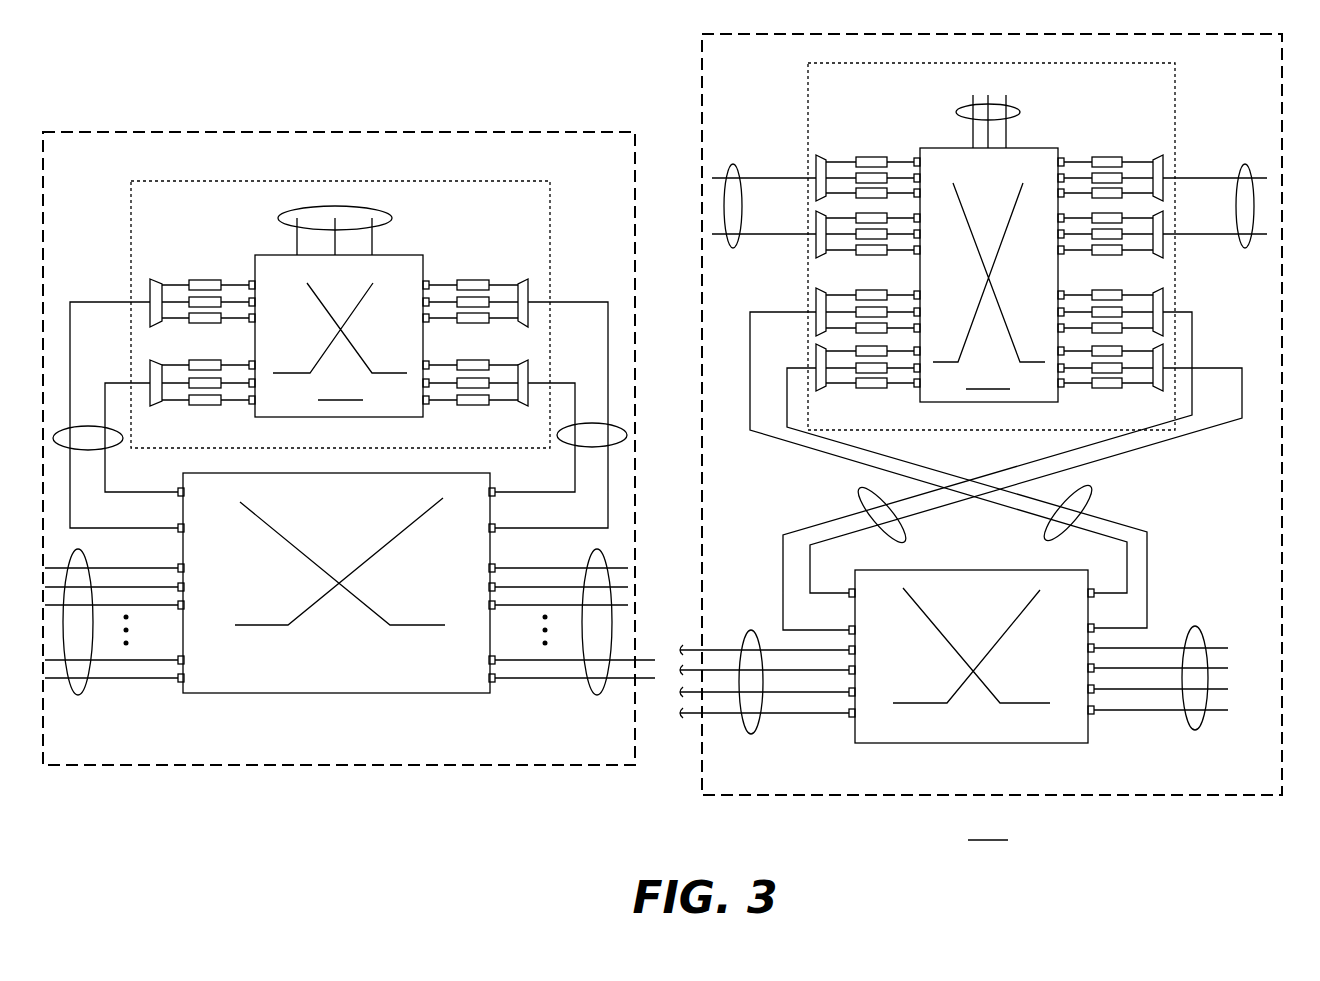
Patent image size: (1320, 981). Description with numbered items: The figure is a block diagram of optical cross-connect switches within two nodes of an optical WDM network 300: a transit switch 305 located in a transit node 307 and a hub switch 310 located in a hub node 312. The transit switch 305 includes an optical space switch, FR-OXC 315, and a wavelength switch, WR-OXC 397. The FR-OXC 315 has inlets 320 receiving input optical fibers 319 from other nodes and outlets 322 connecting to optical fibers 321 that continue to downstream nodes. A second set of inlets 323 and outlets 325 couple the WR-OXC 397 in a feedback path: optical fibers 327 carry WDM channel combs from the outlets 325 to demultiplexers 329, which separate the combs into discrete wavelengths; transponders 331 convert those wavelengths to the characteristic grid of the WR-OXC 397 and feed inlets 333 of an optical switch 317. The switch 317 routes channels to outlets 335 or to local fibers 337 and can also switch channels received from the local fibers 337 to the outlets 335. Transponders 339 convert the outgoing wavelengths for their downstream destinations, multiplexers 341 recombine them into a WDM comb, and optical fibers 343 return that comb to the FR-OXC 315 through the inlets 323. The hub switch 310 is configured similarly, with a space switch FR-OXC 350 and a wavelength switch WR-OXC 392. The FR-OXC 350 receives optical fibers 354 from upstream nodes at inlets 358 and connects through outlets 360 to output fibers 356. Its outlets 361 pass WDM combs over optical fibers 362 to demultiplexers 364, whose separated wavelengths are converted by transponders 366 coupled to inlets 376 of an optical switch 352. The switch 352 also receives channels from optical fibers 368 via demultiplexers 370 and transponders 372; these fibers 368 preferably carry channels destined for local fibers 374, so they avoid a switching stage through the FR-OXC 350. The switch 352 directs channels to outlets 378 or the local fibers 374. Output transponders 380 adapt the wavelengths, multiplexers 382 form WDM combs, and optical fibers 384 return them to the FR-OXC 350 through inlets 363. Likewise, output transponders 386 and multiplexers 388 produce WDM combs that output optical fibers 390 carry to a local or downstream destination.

The optical network 300 is at (981, 442).
The transit switch 305 is at (350, 616).
The transit node 307 is at (570, 768).
The hub switch 310 is at (977, 680).
The hub node 312 is at (1120, 797).
The FR-OXC 315 is at (430, 697).
The optical switch 317 is at (339, 351).
The input optical fibers 319 is at (78, 696).
The inlets 320 is at (183, 692).
The optical fibers 321 is at (597, 696).
The outlets 322 is at (490, 694).
The inlets 323 is at (178, 527).
The outlets 325 is at (495, 525).
The optical fibers 327 is at (588, 447).
The demultiplexers 329 is at (533, 290).
The transponders 331 is at (478, 281).
The inlets 333 is at (431, 282).
The outlets 335 is at (250, 282).
The local fibers 337 is at (330, 204).
The transponders 339 is at (203, 277).
The multiplexers 341 is at (152, 282).
The optical fibers 343 is at (96, 446).
The FR-OXC 350 is at (905, 745).
The optical switch 352 is at (989, 290).
The optical fibers 354 is at (751, 735).
The output fibers 356 is at (1200, 730).
The inlets 358 is at (853, 722).
The outlets 360 is at (1090, 723).
The outlets 361 is at (1094, 628).
The optical fibers 362 is at (1093, 490).
The inlets 363 is at (850, 628).
The demultiplexers 364 is at (814, 342).
The transponders 366 is at (866, 291).
The optical fibers 368 is at (733, 170).
The demultiplexers 370 is at (814, 206).
The transponders 372 is at (876, 154).
The local fibers 374 is at (1022, 112).
The inlets 376 is at (916, 160).
The outlets 378 is at (1112, 155).
The output transponders 380 is at (1104, 295).
The multiplexers 382 is at (1165, 385).
The optical fibers 384 is at (858, 492).
The output transponders 386 is at (1063, 157).
The multiplexers 388 is at (1162, 157).
The output optical fibers 390 is at (1245, 246).
The WR-OXC 392 is at (1175, 72).
The WR-OXC 397 is at (551, 205).